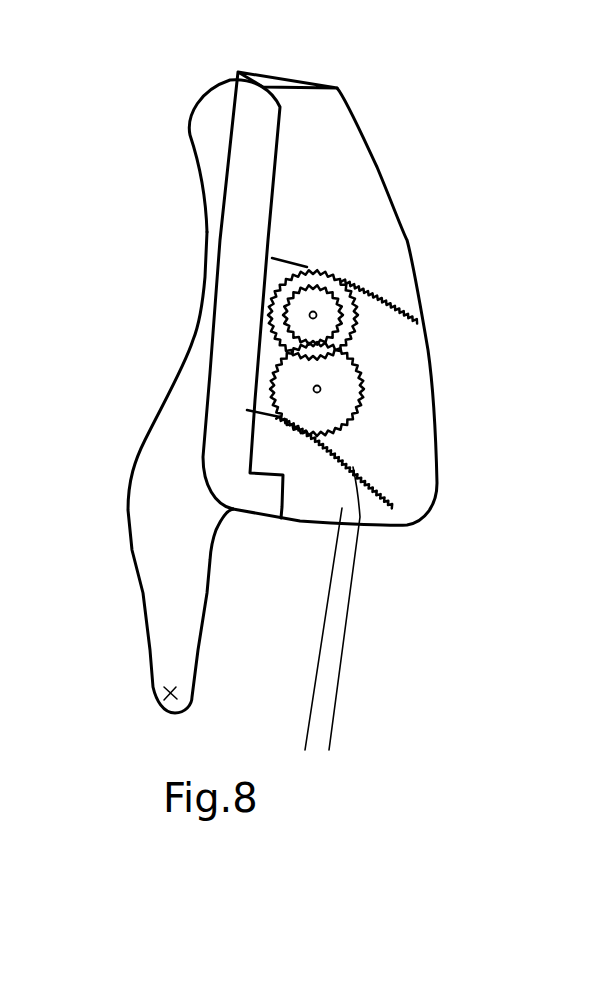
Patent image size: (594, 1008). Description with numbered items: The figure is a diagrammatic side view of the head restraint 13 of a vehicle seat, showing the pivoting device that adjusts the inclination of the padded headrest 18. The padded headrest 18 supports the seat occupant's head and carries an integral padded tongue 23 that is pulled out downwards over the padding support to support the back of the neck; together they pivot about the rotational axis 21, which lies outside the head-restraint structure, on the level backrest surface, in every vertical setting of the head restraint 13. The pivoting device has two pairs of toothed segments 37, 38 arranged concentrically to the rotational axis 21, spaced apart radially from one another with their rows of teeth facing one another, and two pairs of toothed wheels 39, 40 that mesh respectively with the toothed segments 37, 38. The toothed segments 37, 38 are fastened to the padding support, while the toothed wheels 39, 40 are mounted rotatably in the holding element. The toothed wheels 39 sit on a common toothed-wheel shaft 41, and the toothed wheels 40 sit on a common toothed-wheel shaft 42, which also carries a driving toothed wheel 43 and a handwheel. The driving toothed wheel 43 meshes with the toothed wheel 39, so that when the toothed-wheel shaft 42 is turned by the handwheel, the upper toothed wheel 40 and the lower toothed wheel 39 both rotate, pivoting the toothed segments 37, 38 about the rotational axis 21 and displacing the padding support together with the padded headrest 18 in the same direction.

The head restraint 13 is at (393, 112).
The padded headrest 18 is at (215, 123).
The rotational axis 21 is at (162, 700).
The padded tongue 23 is at (168, 617).
The toothed segment 37 is at (363, 523).
The toothed segment 38 is at (420, 303).
The toothed wheel 39 is at (337, 405).
The toothed wheel 40 is at (318, 278).
The toothed-wheel shaft 41 is at (325, 389).
The toothed-wheel shaft 42 is at (316, 312).
The driving toothed wheel 43 is at (332, 322).